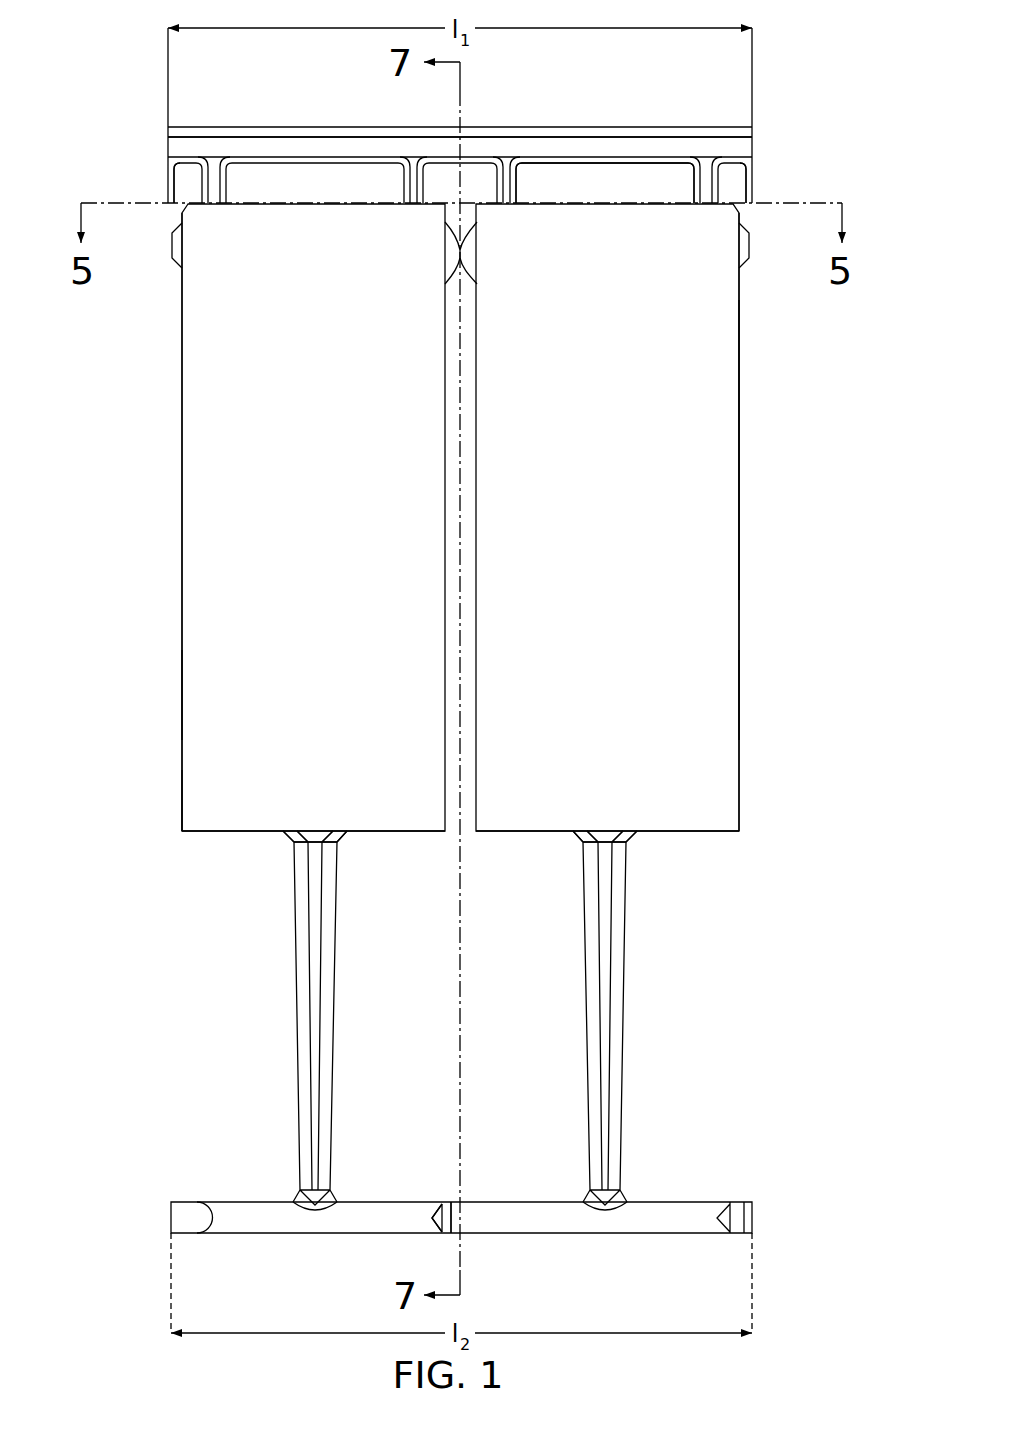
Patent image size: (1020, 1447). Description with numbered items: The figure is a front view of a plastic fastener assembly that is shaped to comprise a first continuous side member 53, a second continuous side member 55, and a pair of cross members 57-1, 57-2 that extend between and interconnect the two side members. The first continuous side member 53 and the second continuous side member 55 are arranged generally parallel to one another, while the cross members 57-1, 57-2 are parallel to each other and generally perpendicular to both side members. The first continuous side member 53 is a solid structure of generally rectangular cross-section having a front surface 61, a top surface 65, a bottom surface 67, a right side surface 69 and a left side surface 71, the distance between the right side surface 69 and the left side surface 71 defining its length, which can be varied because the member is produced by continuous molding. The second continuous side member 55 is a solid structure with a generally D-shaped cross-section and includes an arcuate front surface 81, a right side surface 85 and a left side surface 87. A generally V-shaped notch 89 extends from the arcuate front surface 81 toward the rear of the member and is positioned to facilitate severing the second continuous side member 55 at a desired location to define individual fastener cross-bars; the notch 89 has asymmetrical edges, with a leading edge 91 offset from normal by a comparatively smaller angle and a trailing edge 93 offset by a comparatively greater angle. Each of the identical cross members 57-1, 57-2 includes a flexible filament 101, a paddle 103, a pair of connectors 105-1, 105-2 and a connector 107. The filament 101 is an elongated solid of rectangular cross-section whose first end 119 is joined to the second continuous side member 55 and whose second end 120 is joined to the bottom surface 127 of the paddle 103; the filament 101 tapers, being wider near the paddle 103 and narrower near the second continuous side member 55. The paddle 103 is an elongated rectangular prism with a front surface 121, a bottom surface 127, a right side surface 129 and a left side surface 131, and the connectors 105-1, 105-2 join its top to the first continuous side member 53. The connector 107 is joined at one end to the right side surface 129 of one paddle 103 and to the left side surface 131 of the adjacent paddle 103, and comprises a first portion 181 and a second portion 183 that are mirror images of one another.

The first continuous side member 53 is at (462, 133).
The second continuous side member 55 is at (460, 1211).
The cross member 57-1 is at (150, 613).
The cross member 57-2 is at (770, 613).
The front surface 61 is at (303, 148).
The top surface 65 is at (240, 127).
The bottom surface 67 is at (676, 165).
The right side surface 69 is at (755, 147).
The left side surface 71 is at (168, 137).
The arcuate front surface 81 is at (672, 1215).
The right side surface 85 is at (752, 1217).
The left side surface 87 is at (170, 1217).
The notch 89 is at (448, 1180).
The leading edge 91 is at (432, 1220).
The trailing edge 93 is at (462, 1203).
The flexible filament 101 is at (458, 1020).
The paddle 103 is at (179, 404).
The connector 105-1 is at (204, 192).
The connector 105-2 is at (404, 192).
The connector 107 is at (441, 258).
The first end 119 is at (315, 1200).
The second end 120 is at (338, 843).
The front surface 121 is at (213, 692).
The bottom surface 127 is at (225, 832).
The right side surface 129 is at (741, 468).
The left side surface 131 is at (182, 800).
The first portion 181 is at (740, 266).
The second portion 183 is at (181, 266).